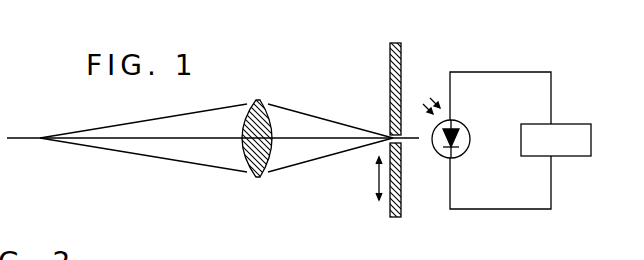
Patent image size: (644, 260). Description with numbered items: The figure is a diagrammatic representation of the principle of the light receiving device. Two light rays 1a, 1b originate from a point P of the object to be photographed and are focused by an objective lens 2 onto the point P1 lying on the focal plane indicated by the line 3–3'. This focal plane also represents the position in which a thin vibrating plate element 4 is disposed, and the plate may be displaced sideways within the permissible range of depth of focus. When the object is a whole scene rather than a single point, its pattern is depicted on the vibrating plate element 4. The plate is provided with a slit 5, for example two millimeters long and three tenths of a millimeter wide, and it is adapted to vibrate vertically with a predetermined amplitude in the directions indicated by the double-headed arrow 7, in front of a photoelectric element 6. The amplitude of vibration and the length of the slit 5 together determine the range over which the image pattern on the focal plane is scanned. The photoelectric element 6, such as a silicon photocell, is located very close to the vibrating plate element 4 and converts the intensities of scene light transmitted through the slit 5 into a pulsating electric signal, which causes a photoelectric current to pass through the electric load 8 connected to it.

The point of the object P is at (39, 124).
The light ray 1a is at (228, 108).
The light ray 1b is at (207, 165).
The objective lens 2 is at (266, 117).
The focal plane 3 is at (403, 72).
The focal plane 3' is at (396, 200).
The vibrating plate element 4 is at (401, 90).
The slit 5 is at (402, 139).
The image point on the focal plane P1 is at (391, 136).
The photoelectric element 6 is at (463, 124).
The double-headed arrow 7 is at (379, 185).
The electric load 8 is at (576, 124).